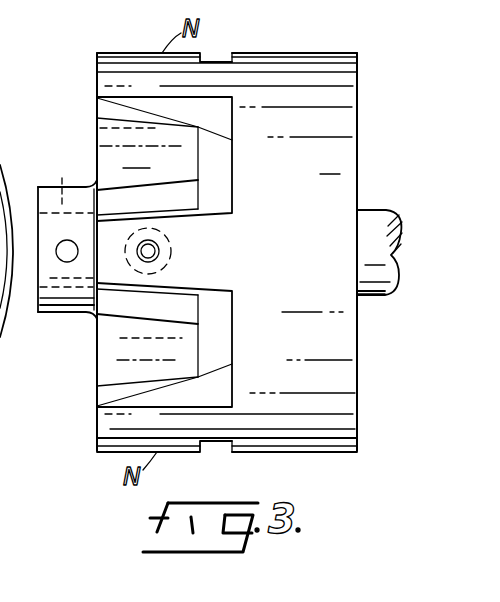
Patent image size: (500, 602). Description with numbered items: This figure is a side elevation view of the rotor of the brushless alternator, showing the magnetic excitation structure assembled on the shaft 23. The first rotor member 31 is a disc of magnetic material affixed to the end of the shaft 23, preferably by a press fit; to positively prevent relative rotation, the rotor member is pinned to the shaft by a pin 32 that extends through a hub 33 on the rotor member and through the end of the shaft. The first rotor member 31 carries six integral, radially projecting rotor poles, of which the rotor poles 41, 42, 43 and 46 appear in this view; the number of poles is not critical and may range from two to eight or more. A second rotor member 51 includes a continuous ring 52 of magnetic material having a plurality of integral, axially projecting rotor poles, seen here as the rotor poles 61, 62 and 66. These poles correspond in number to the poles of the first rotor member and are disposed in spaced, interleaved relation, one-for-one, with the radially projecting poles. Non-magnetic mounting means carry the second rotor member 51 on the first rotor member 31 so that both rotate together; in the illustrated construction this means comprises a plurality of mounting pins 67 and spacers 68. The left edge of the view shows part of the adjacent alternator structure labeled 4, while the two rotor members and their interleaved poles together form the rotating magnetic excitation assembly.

The rotor 4 is at (7, 204).
The shaft 23 is at (62, 177).
The first rotor member 31 is at (96, 144).
The pin 32 is at (62, 258).
The hub 33 is at (60, 305).
The rotor pole 41 is at (188, 163).
The rotor pole 42 is at (190, 348).
The rotor pole 43 is at (105, 452).
The rotor pole 46 is at (97, 51).
The second rotor member 51 is at (314, 58).
The continuous ring 52 is at (297, 448).
The rotor pole 61 is at (117, 270).
The rotor pole 62 is at (97, 422).
The rotor pole 66 is at (97, 78).
The mounting pin 67 is at (156, 254).
The spacer 68 is at (169, 240).